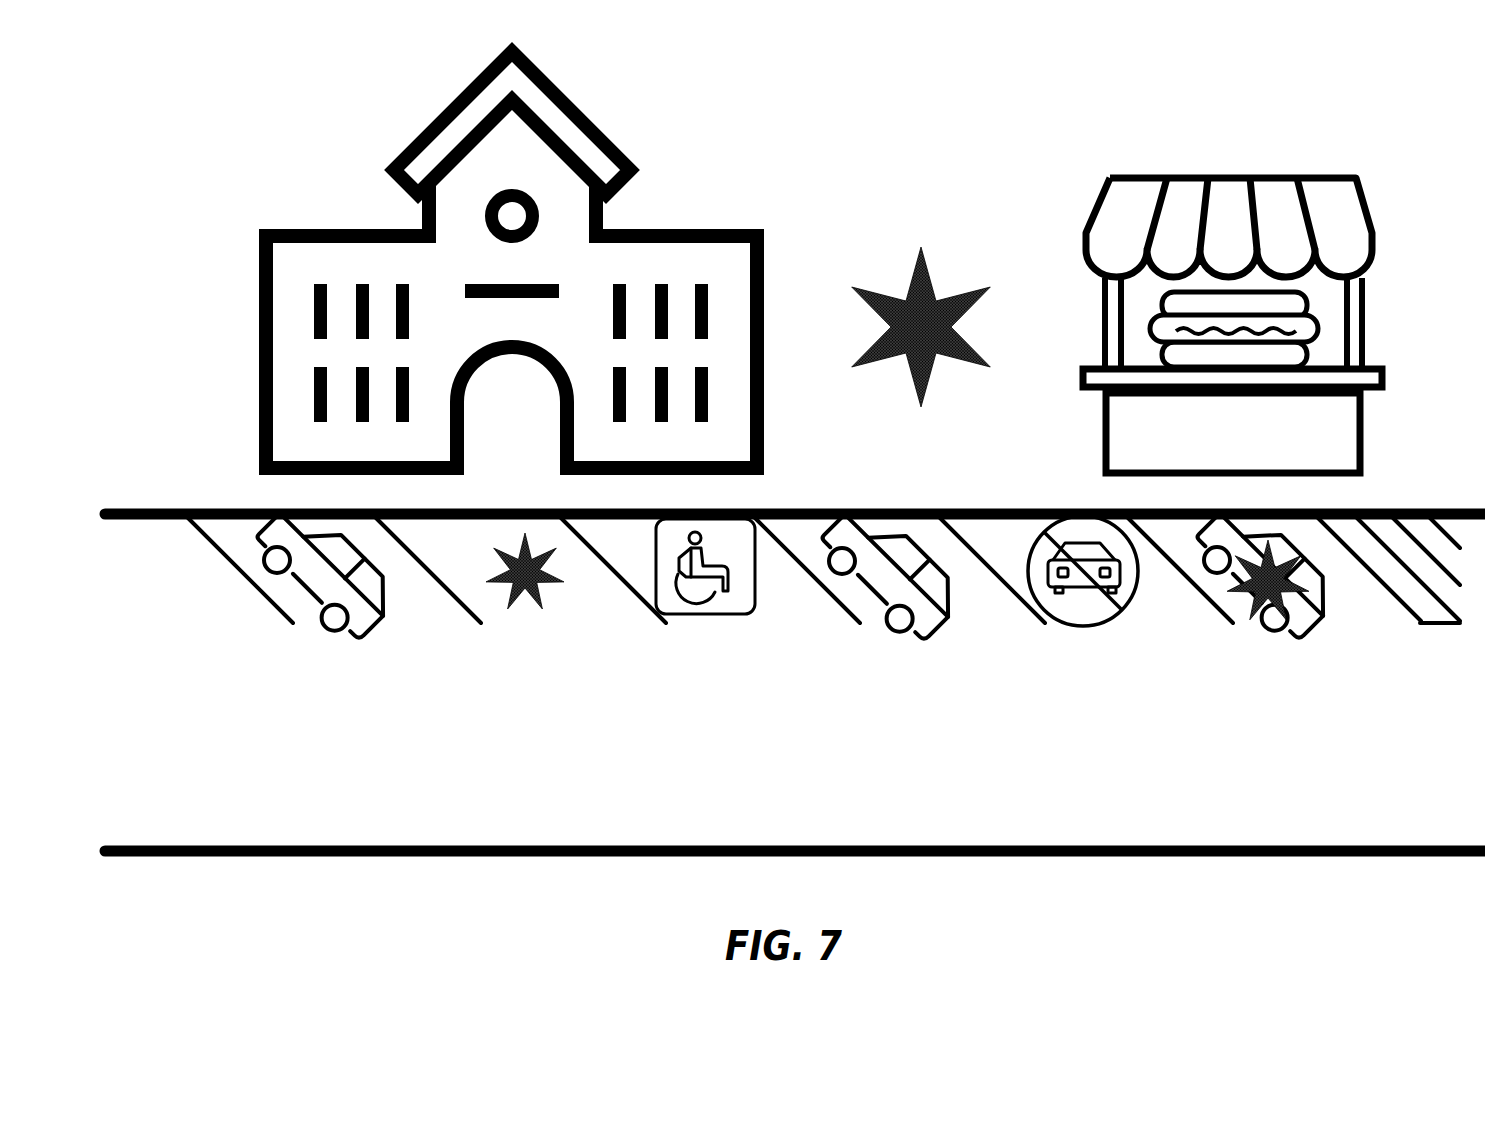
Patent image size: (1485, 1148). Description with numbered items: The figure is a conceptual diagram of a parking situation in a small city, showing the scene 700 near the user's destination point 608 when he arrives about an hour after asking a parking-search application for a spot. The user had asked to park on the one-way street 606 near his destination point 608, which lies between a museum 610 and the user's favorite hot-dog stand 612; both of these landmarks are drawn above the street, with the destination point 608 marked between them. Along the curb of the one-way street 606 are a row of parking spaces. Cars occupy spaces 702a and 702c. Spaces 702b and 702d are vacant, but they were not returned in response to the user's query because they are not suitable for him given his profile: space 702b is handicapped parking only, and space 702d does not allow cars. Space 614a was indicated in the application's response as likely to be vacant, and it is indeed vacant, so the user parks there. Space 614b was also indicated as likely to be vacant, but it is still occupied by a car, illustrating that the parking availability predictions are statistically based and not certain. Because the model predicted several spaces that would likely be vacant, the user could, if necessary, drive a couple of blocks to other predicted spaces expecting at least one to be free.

The scene 700 is at (206, 130).
The one-way street 606 is at (793, 812).
The destination point 608 is at (928, 225).
The museum 610 is at (700, 203).
The hot-dog stand 612 is at (1045, 240).
The space 614a is at (542, 625).
The space 614b is at (1300, 660).
The space 702a is at (353, 660).
The space 702b is at (712, 660).
The space 702c is at (925, 660).
The space 702d is at (1103, 660).